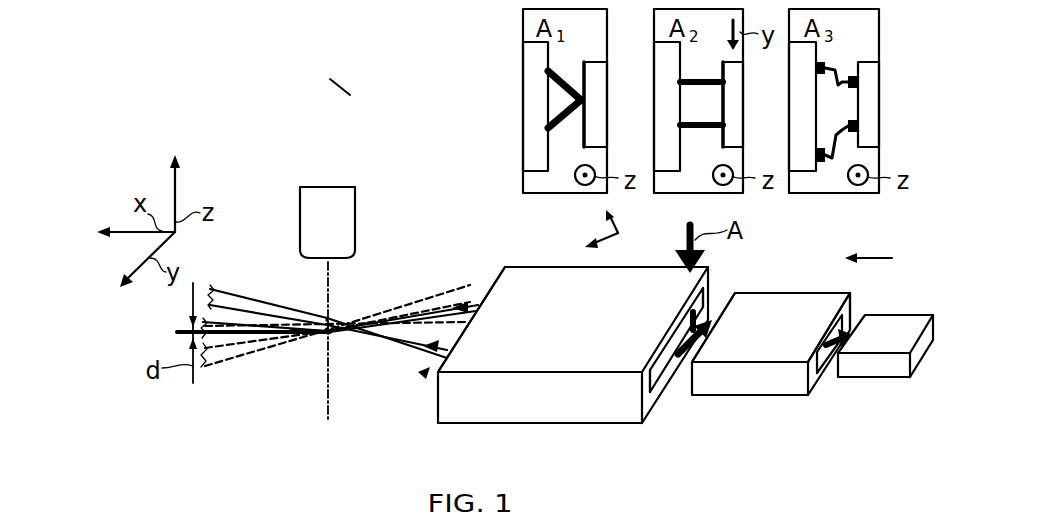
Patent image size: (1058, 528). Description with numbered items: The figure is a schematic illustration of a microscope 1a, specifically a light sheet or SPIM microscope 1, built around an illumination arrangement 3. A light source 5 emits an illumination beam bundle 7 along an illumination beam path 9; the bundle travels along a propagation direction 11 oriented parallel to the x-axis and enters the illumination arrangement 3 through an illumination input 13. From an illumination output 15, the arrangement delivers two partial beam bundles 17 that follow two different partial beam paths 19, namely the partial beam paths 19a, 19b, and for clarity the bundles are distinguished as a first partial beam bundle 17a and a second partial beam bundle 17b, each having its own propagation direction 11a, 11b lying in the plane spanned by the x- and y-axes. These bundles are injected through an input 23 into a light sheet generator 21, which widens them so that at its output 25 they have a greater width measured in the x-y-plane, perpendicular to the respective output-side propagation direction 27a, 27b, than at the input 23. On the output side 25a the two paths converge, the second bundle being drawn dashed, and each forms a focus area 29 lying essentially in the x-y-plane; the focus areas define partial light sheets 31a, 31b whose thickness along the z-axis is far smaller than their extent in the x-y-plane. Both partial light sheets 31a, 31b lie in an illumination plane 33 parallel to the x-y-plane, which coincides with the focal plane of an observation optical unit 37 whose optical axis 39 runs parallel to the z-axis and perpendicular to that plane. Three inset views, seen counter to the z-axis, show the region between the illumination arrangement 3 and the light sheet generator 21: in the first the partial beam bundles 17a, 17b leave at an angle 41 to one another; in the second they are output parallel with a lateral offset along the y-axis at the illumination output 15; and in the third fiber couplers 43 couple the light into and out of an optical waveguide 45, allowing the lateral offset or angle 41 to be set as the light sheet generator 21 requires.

The SPIM microscope 1 is at (356, 100).
The microscope 1a is at (340, 87).
The illumination arrangement 3 is at (772, 397).
The light source 5 is at (887, 377).
The illumination beam bundle 7 is at (828, 365).
The illumination beam path 9 is at (843, 320).
The propagation direction 11 is at (875, 258).
The propagation direction 11a is at (619, 235).
The propagation direction 11b is at (619, 224).
The illumination input 13 is at (817, 347).
The illumination output 15 is at (724, 300).
The partial beam bundles 17 is at (688, 323).
The first partial beam bundle 17a is at (375, 344).
The second partial beam bundle 17b is at (392, 300).
The partial beam paths 19 is at (698, 290).
The partial beam path 19a is at (686, 346).
The partial beam path 19b is at (690, 342).
The light sheet generator 21 is at (535, 420).
The input 23 is at (660, 365).
The output 25 is at (438, 417).
The output side 25a is at (424, 376).
The output-side propagation direction 27a is at (440, 350).
The output-side propagation direction 27b is at (468, 285).
The focus area 29 is at (316, 298).
The partial light sheet 31a is at (307, 340).
The partial light sheet 31b is at (357, 316).
The illumination plane 33 is at (320, 354).
The observation optical unit 37 is at (315, 192).
The optical axis 39 is at (327, 405).
The angle 41 is at (563, 98).
The fiber couplers 43 is at (822, 62).
The optical waveguide 45 is at (830, 84).